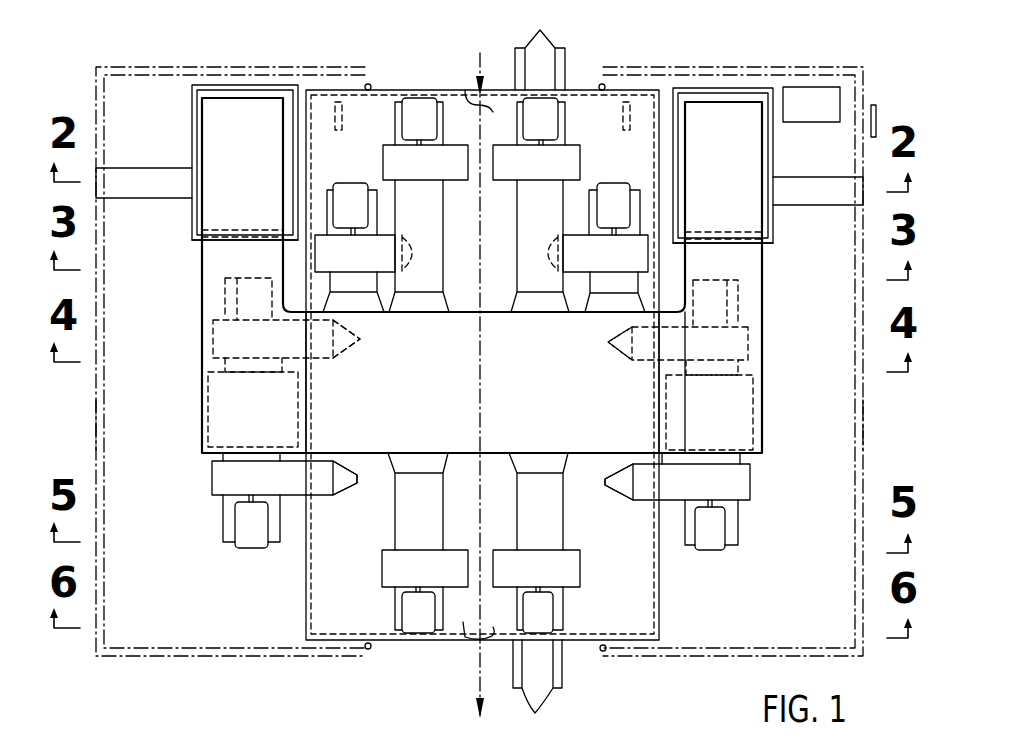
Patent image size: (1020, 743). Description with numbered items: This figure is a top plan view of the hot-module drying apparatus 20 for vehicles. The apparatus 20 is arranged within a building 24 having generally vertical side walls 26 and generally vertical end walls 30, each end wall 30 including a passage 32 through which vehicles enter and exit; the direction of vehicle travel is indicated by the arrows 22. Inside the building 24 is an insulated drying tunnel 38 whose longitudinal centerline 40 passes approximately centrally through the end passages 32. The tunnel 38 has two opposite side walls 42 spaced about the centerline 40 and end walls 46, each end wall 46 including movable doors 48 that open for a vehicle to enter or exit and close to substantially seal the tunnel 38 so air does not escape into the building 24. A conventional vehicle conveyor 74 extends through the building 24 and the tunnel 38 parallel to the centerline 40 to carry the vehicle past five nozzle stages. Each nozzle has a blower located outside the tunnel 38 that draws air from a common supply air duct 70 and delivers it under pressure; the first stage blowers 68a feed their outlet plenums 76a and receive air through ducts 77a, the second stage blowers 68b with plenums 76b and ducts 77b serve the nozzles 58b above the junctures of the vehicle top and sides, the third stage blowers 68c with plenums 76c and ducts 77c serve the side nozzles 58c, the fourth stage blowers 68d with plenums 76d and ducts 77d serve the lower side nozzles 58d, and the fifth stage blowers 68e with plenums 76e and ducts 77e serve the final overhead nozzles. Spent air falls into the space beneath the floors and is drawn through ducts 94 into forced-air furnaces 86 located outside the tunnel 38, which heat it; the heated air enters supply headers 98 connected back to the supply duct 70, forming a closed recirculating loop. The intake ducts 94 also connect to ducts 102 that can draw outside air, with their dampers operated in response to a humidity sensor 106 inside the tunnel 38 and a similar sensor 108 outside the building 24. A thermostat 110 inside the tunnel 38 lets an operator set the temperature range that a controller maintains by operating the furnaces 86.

The drying apparatus 20 is at (188, 466).
The arrows 22 is at (478, 65).
The building 24 is at (188, 72).
The side walls 26 is at (96, 428).
The end walls 30 is at (290, 68).
The passage 32 is at (370, 73).
The drying tunnel 38 is at (659, 608).
The longitudinal centerline 40 is at (481, 385).
The side walls 42 is at (308, 421).
The end walls 46 is at (622, 86).
The movable doors 48 is at (483, 364).
The nozzle 58b is at (408, 235).
The nozzle 58c is at (361, 340).
The nozzle 58d is at (354, 487).
The blower 68a is at (400, 119).
The blower 68b is at (357, 190).
The blower 68c is at (256, 282).
The blower 68d is at (244, 546).
The blower 68e is at (398, 616).
The common supply air duct 70 is at (762, 412).
The vehicle conveyor 74 is at (546, 25).
The outlet plenum 76a is at (421, 176).
The outlet plenum 76b is at (351, 266).
The outlet plenum 76c is at (254, 352).
The outlet plenum 76d is at (252, 489).
The outlet plenum 76e is at (436, 577).
The duct 77a is at (479, 246).
The duct 77b is at (484, 291).
The duct 77c is at (225, 368).
The duct 77d is at (222, 458).
The duct 77e is at (425, 525).
The forced-air furnace 86 is at (192, 134).
The duct 94 is at (195, 235).
The supply header 98 is at (202, 160).
The duct 102 is at (138, 193).
The humidity sensor 106 is at (623, 128).
The sensor 108 is at (878, 101).
The thermostat 110 is at (337, 129).